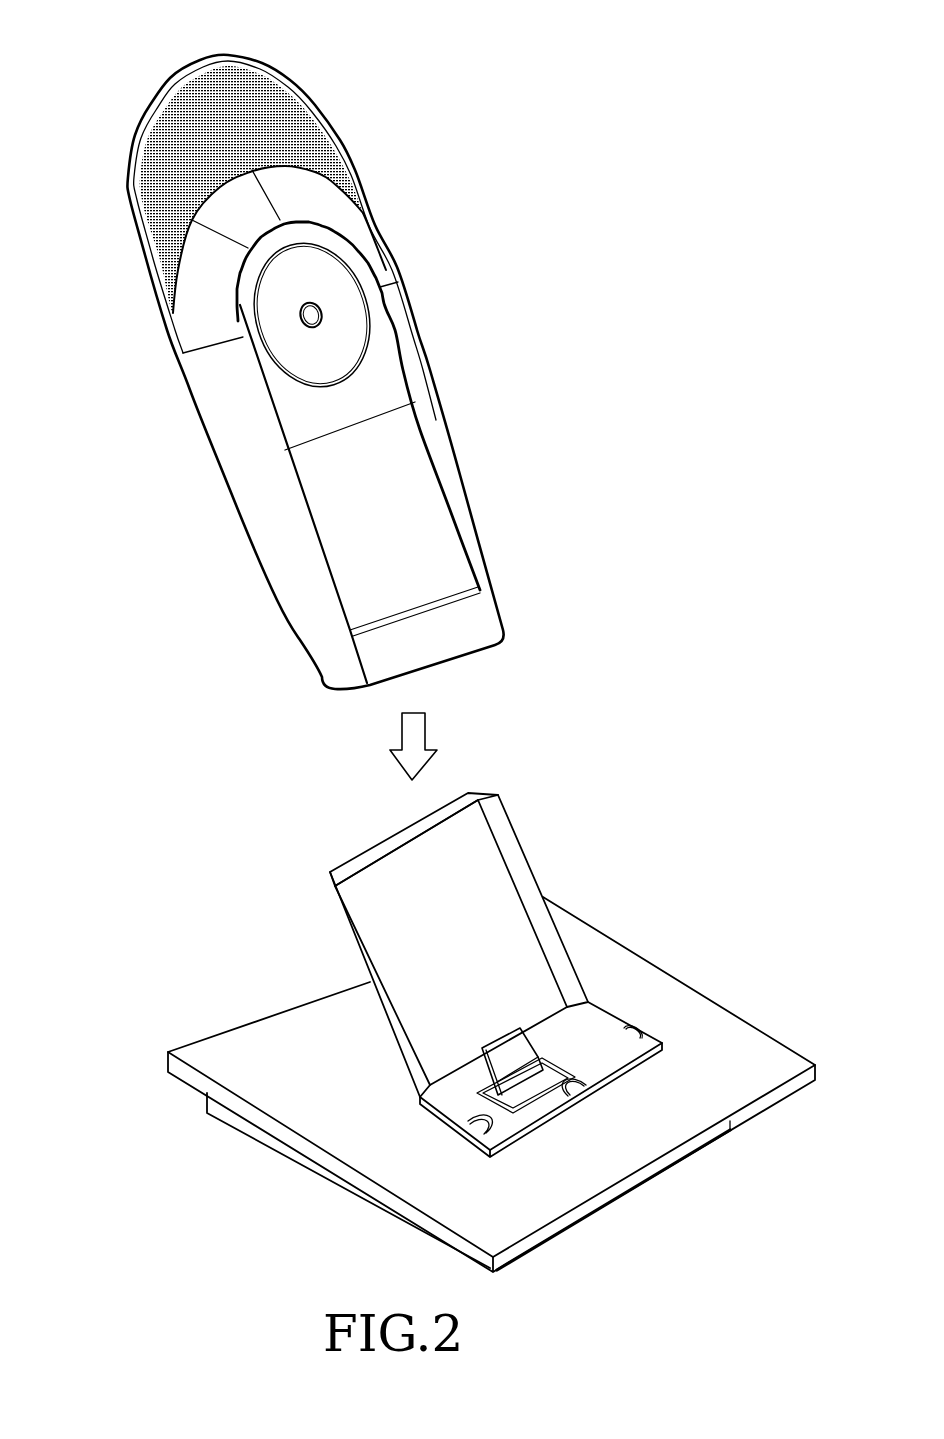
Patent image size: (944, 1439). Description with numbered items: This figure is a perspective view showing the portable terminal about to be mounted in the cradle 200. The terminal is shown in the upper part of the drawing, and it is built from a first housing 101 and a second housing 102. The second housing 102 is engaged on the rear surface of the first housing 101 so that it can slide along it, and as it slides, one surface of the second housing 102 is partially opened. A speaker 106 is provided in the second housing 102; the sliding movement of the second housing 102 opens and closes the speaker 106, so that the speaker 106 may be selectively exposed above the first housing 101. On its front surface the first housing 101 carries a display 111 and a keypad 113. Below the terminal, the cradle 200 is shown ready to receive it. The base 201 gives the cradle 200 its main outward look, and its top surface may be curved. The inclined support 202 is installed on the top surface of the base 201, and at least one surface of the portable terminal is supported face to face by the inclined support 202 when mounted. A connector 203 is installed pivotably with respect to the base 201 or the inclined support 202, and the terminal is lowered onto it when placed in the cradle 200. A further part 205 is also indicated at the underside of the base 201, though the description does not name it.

The first housing 101 is at (358, 344).
The second housing 102 is at (184, 56).
The speaker 106 is at (290, 105).
The display 111 is at (415, 478).
The keypad 113 is at (332, 276).
The cradle 200 is at (477, 1011).
The base 201 is at (585, 1166).
The inclined support 202 is at (552, 842).
The connector 203 is at (506, 1052).
The bottom plate 205 is at (314, 1206).